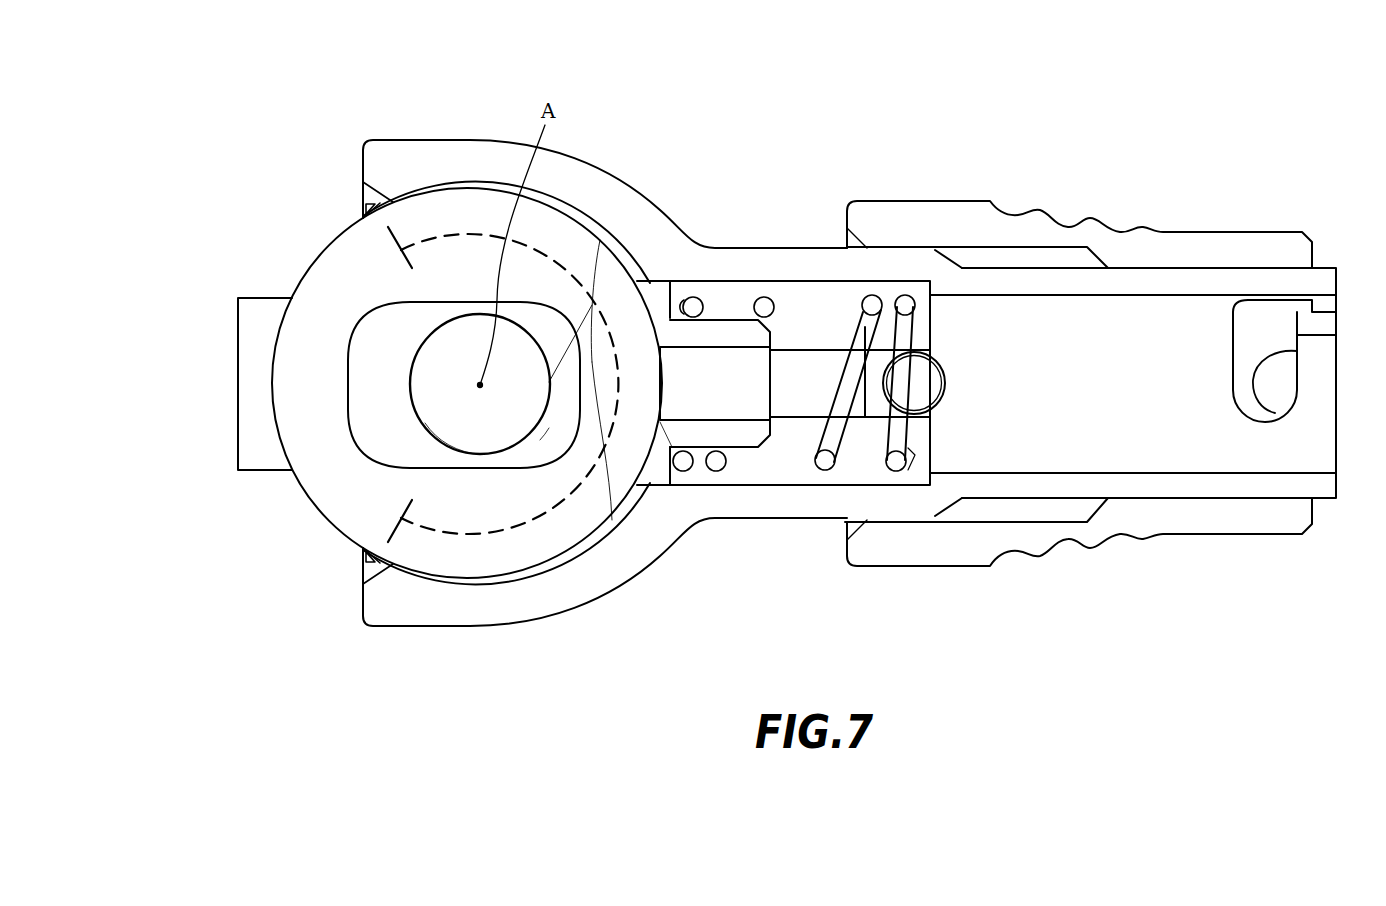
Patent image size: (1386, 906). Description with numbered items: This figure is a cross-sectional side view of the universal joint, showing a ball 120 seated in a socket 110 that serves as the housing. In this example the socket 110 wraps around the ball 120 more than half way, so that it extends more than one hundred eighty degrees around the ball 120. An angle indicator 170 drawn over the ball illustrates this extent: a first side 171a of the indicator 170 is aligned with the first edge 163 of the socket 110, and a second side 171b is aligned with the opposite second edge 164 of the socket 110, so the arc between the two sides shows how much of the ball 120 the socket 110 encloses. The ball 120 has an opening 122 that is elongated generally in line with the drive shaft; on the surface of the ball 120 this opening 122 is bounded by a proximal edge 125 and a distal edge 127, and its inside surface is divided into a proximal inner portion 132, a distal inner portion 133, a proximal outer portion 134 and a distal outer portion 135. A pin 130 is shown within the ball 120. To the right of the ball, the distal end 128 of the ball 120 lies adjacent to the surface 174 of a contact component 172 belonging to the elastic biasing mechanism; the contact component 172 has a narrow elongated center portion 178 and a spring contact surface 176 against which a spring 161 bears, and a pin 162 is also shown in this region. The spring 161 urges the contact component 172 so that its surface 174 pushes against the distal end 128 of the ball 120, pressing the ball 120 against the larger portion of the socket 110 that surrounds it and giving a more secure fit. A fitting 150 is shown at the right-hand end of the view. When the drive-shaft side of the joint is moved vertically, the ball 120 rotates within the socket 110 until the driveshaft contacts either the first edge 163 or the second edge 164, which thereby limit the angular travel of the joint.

The socket 110 is at (540, 627).
The ball 120 is at (353, 499).
The opening 122 is at (540, 440).
The proximal edge of opening 125 is at (347, 397).
The distal edge of opening 127 is at (672, 430).
The distal end of ball 128 is at (640, 283).
The pin 130 is at (457, 337).
The proximal inner portion of inside surface of ball opening 132 is at (422, 422).
The distal inner portion of inside surface of ball opening 133 is at (600, 240).
The proximal outer portion of inside surface of ball opening 134 is at (360, 385).
The distal outer portion of inside surface of ball opening 135 is at (612, 520).
The fitting 150 is at (1057, 212).
The spring 161 is at (826, 470).
The pin 162 is at (920, 378).
The first edge of housing 163 is at (363, 196).
The second edge of housing 164 is at (363, 570).
The angle indicator 170 is at (559, 264).
The first side of indicator 171a is at (388, 243).
The second side of indicator 171b is at (390, 528).
The contact component 172 is at (720, 337).
The surface of contact component 174 is at (663, 405).
The spring contact surface 176 is at (684, 290).
The narrow elongated center portion 178 is at (805, 350).